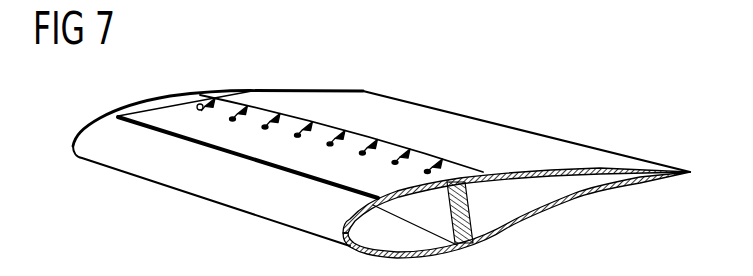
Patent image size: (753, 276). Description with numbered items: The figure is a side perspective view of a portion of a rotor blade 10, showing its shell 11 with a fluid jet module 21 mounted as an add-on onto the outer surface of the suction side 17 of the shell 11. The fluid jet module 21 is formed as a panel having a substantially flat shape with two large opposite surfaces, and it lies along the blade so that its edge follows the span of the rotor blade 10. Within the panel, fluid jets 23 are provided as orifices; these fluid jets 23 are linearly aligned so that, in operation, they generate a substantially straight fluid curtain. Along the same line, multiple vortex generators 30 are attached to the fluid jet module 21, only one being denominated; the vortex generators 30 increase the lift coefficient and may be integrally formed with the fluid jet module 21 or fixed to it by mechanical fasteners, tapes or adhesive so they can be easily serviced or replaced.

The rotor blade 10 is at (497, 129).
The shell 11 is at (98, 152).
The suction side 17 is at (315, 100).
The fluid jet module 21 is at (155, 111).
The fluid jet 23 is at (200, 104).
The vortex generator 30 is at (243, 102).